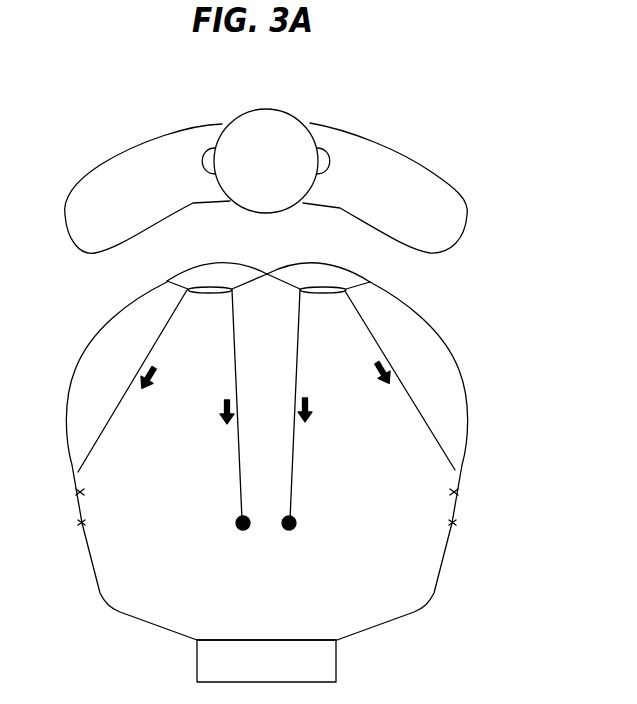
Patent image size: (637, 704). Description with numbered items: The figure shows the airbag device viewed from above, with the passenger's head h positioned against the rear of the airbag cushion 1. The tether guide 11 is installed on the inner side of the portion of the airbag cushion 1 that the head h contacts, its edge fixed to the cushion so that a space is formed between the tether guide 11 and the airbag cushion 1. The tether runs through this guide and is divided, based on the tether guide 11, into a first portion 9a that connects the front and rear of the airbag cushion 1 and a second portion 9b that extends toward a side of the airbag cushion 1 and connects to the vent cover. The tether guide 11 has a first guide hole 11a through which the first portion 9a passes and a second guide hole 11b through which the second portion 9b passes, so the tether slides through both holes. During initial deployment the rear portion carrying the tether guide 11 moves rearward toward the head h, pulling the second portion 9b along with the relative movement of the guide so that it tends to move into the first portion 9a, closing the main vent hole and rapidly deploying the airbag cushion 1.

The head of the passenger h is at (283, 130).
The airbag cushion 1 is at (423, 310).
The tether guide 11 is at (387, 282).
The first guide hole 11a is at (300, 283).
The second guide hole 11b is at (347, 290).
The first portion 9a is at (295, 432).
The second portion 9b is at (383, 350).